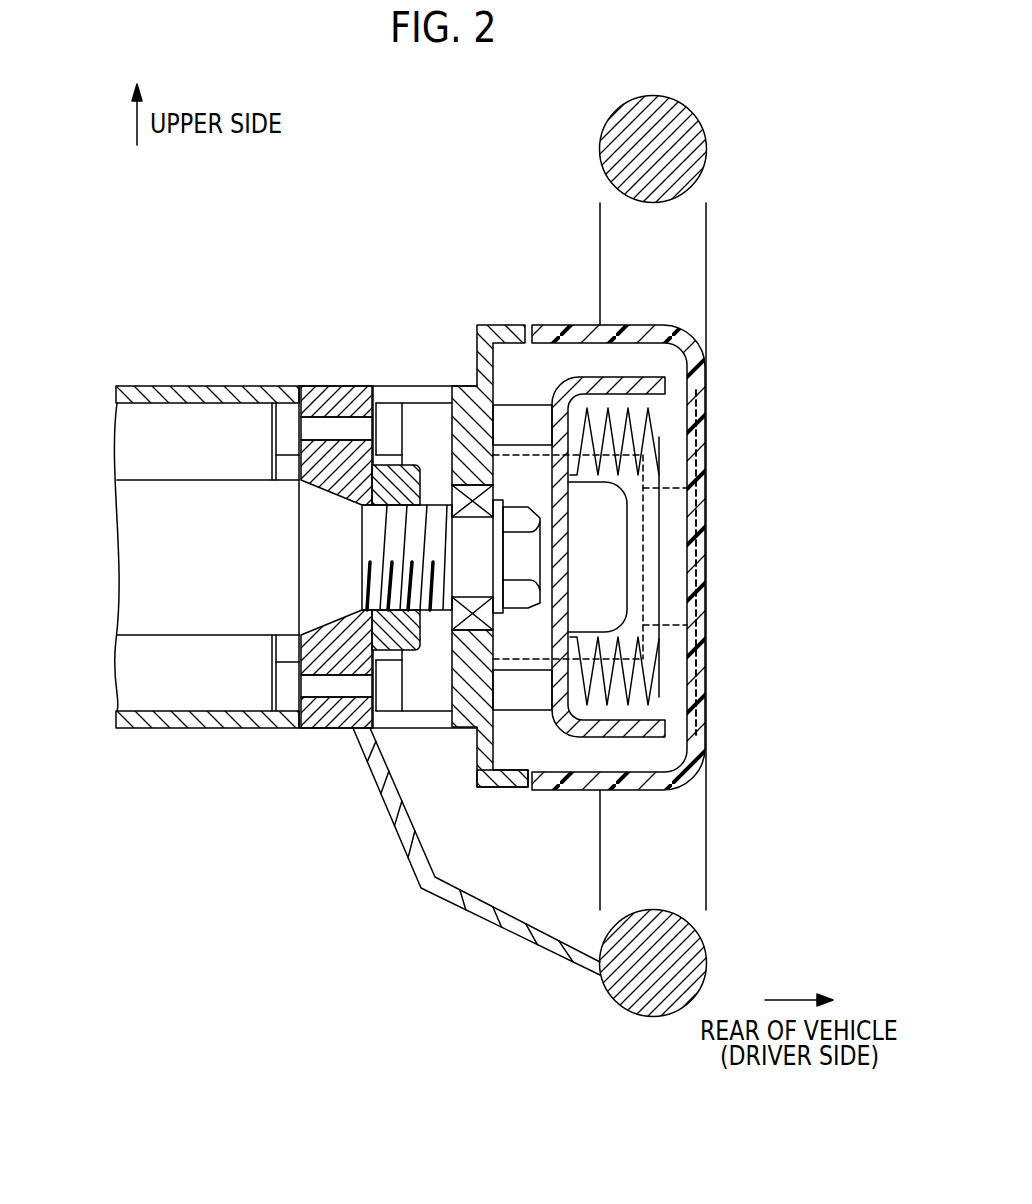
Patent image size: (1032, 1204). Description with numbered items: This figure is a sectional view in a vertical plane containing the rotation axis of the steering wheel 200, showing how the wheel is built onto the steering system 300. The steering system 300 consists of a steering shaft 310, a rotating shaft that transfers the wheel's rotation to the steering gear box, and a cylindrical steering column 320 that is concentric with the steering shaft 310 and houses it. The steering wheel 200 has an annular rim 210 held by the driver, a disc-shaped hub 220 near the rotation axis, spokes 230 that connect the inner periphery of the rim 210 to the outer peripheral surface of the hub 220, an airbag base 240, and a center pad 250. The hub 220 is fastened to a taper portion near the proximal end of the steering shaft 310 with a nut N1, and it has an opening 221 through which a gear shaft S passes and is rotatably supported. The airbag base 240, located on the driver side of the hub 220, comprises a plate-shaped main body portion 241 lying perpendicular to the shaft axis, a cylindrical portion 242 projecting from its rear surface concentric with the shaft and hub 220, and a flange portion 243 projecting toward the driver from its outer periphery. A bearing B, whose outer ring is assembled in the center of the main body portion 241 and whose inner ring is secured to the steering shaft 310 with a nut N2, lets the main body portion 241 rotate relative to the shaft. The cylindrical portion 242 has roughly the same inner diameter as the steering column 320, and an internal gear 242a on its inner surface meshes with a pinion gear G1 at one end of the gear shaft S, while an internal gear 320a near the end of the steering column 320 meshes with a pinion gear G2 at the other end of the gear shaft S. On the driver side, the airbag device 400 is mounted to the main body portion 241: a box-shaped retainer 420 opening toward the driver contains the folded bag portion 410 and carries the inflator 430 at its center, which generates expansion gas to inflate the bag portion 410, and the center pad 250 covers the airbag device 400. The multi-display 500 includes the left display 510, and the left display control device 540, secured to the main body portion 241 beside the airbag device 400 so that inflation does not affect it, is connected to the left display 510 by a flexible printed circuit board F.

The steering wheel 200 is at (755, 160).
The rim 210 is at (626, 125).
The hub 220 is at (313, 407).
The opening 221 is at (333, 420).
The spokes 230 is at (432, 888).
The airbag base 240 is at (466, 270).
The main body portion 241 is at (477, 690).
The cylindrical portion 242 is at (398, 727).
The internal gear 242a is at (387, 655).
The flange portion 243 is at (508, 782).
The center pad 250 is at (690, 352).
The steering system 300 is at (200, 290).
The steering shaft 310 is at (197, 500).
The steering column 320 is at (152, 387).
The internal gear 320a is at (286, 652).
The airbag device 400 is at (568, 352).
The bag portion 410 is at (655, 445).
The retainer 420 is at (667, 380).
The inflator 430 is at (617, 603).
The multi-display 500 is at (705, 472).
The left display 510 is at (705, 472).
The left display control device 540 is at (643, 528).
The flexible printed circuit board F is at (673, 568).
The bearing B is at (493, 618).
The nut N1 is at (427, 470).
The nut N2 is at (520, 513).
The gear shaft S is at (361, 425).
The pinion gear G1 is at (388, 412).
The pinion gear G2 is at (288, 412).